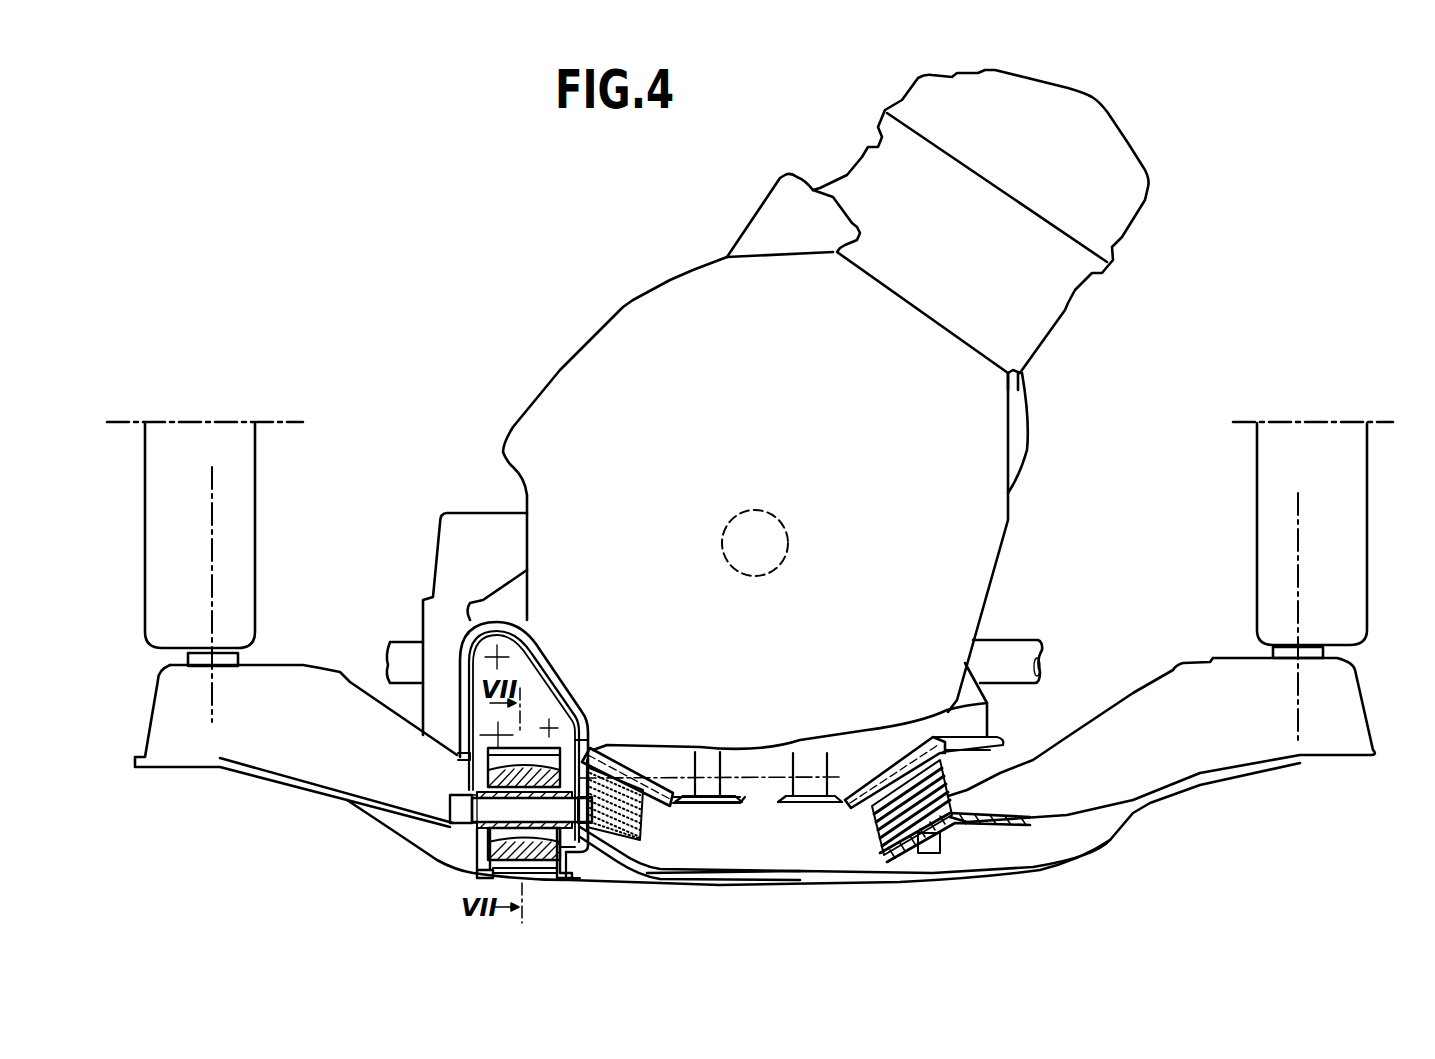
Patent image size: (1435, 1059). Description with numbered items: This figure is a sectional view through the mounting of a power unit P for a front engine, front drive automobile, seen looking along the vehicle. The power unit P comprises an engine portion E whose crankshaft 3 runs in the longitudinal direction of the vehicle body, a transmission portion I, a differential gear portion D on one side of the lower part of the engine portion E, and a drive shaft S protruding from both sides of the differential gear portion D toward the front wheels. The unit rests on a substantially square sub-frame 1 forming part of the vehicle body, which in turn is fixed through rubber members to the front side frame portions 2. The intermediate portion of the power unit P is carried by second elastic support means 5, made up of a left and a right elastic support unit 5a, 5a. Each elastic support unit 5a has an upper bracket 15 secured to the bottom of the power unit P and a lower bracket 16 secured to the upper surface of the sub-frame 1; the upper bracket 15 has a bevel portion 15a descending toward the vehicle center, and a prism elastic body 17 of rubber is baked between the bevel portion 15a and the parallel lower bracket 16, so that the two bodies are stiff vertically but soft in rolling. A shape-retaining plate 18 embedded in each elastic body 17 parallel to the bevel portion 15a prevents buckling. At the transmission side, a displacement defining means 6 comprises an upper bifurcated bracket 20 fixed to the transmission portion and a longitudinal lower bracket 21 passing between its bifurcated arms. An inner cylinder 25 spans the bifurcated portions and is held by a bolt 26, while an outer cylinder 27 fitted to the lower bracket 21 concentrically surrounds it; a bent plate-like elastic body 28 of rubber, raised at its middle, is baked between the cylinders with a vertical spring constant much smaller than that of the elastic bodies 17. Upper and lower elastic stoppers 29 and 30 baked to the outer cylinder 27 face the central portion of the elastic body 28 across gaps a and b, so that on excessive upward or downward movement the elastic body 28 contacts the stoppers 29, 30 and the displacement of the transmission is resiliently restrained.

The sub-frame 1 is at (280, 767).
The front side frame portions 2 is at (257, 478).
The crankshaft 3 is at (788, 543).
The second elastic support means 5 is at (783, 752).
The elastic support unit 5a is at (662, 769).
The displacement defining means 6 is at (477, 860).
The upper bracket 15 is at (657, 773).
The bevel portion 15a is at (657, 804).
The lower bracket 16 is at (625, 847).
The prism elastic body 17 is at (650, 813).
The shape-retaining plate 18 is at (633, 827).
The upper bifurcated bracket 20 is at (543, 680).
The lower bracket 21 is at (565, 880).
The inner cylinder 25 is at (480, 782).
The bolt 26 is at (450, 810).
The outer cylinder 27 is at (547, 723).
The bent plate-like elastic body 28 is at (490, 837).
The upper elastic stopper 29 is at (490, 743).
The lower elastic stopper 30 is at (537, 867).
The power unit P is at (765, 468).
The engine portion E is at (973, 267).
The transmission I is at (767, 431).
The differential gear portion D is at (467, 523).
The drive shaft S is at (1008, 650).
The gap a is at (580, 740).
The gap b is at (560, 847).